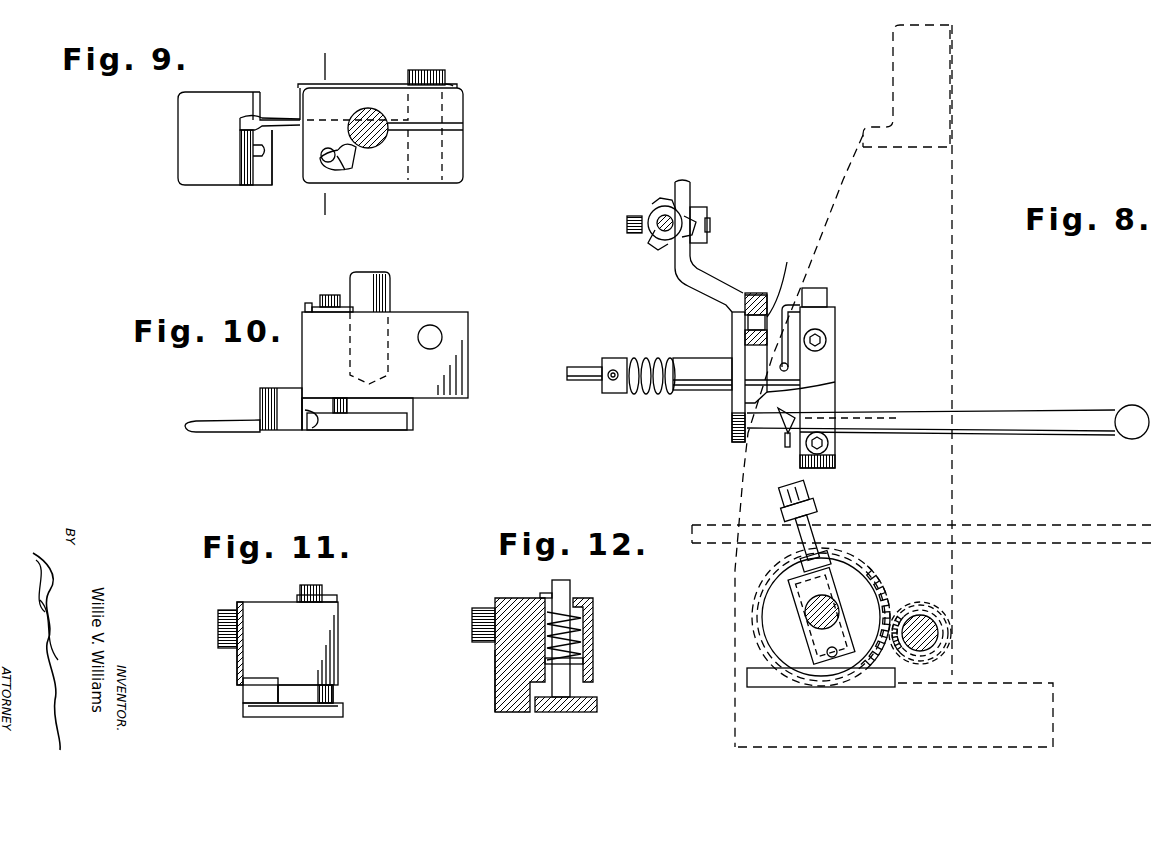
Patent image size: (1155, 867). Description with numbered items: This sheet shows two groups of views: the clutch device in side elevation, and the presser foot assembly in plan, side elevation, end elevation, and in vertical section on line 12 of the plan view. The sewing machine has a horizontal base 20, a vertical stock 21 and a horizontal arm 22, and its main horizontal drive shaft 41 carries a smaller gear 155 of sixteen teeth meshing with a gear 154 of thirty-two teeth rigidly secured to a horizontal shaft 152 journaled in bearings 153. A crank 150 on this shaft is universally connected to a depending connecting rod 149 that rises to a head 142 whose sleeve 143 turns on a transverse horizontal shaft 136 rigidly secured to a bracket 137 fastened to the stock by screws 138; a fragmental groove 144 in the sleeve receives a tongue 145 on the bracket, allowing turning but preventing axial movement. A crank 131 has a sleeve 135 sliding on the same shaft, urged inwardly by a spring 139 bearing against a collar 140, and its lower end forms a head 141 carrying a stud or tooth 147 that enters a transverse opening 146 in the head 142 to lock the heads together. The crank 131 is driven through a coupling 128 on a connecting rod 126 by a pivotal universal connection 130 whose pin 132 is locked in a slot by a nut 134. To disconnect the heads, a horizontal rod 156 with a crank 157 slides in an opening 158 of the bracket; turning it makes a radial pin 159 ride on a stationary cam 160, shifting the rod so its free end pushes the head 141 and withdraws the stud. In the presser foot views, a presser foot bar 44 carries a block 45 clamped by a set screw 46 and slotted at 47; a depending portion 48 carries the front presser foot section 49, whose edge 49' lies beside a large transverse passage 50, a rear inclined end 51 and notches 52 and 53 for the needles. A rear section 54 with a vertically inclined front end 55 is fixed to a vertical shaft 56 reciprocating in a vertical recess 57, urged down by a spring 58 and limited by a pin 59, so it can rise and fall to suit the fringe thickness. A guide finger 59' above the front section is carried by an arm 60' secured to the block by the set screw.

In FIG. 9, the section line 12 is at (318, 66).
In FIG. 8, the horizontal base 20 is at (1045, 523).
In FIG. 8, the vertical stock 21 is at (843, 174).
In FIG. 8, the horizontal arm 22 is at (957, 103).
In FIG. 8, the main horizontal drive shaft 41 is at (933, 630).
In FIG. 9, the presser foot bar 44 is at (370, 117).
In FIG. 10, the presser foot bar 44 is at (390, 290).
In FIG. 9, the block 45 is at (402, 172).
In FIG. 10, the block 45 is at (460, 340).
In FIG. 11, the block 45 is at (330, 636).
In FIG. 12, the block 45 is at (593, 623).
In FIG. 9, the set screw 46 is at (435, 70).
In FIG. 10, the set screw 46 is at (432, 330).
In FIG. 11, the set screw 46 is at (225, 610).
In FIG. 12, the set screw 46 is at (480, 608).
In FIG. 9, the slot 47 is at (457, 128).
In FIG. 9, the depending portion 48 is at (273, 97).
In FIG. 10, the depending portion 48 is at (282, 392).
In FIG. 11, the depending portion 48 is at (252, 695).
In FIG. 12, the depending portion 48 is at (505, 698).
In FIG. 9, the front presser foot section 49 is at (210, 138).
In FIG. 10, the front presser foot section 49 is at (222, 410).
In FIG. 11, the front presser foot section 49 is at (293, 723).
In FIG. 9, the blade edge 49' is at (231, 105).
In FIG. 10, the blade edge 49' is at (244, 399).
In FIG. 11, the blade edge 49' is at (262, 713).
In FIG. 9, the transverse passage 50 is at (285, 180).
In FIG. 10, the transverse passage 50 is at (302, 430).
In FIG. 9, the rear inclined end 51 is at (252, 170).
In FIG. 9, the notch 52 is at (242, 120).
In FIG. 9, the notch 53 is at (258, 153).
In FIG. 10, the rear section 54 is at (368, 423).
In FIG. 12, the rear section 54 is at (575, 712).
In FIG. 10, the vertically inclined front end 55 is at (313, 430).
In FIG. 9, the vertical shaft 56 is at (332, 163).
In FIG. 10, the vertical shaft 56 is at (327, 294).
In FIG. 11, the vertical shaft 56 is at (318, 588).
In FIG. 12, the vertical shaft 56 is at (572, 586).
In FIG. 12, the vertical recess 57 is at (582, 614).
In FIG. 12, the spring 58 is at (583, 658).
In FIG. 9, the pin 59 is at (351, 175).
In FIG. 10, the pin 59 is at (318, 295).
In FIG. 11, the pin 59 is at (340, 597).
In FIG. 12, the pin 59 is at (535, 585).
In FIG. 9, the guide finger 59' is at (469, 73).
In FIG. 9, the arm 60' is at (377, 62).
In FIG. 11, the arm 60' is at (219, 643).
In FIG. 12, the arm 60' is at (474, 661).
In FIG. 8, the connecting rod 126 is at (663, 235).
In FIG. 8, the coupling 128 is at (658, 205).
In FIG. 8, the pivotal universal connection 130 is at (641, 238).
In FIG. 8, the crank 131 is at (713, 300).
In FIG. 8, the pin 132 is at (708, 223).
In FIG. 8, the nut 134 is at (710, 241).
In FIG. 8, the sleeve 135 is at (682, 392).
In FIG. 8, the transverse horizontal shaft 136 is at (568, 387).
In FIG. 8, the bracket 137 is at (840, 390).
In FIG. 8, the screws 138 is at (838, 336).
In FIG. 8, the spring 139 is at (643, 395).
In FIG. 8, the collar 140 is at (612, 395).
In FIG. 8, the head 141 is at (732, 423).
In FIG. 8, the head 142 is at (755, 293).
In FIG. 8, the sleeve 143 is at (838, 398).
In FIG. 8, the fragmental groove 144 is at (790, 368).
In FIG. 8, the tongue 145 is at (785, 335).
In FIG. 8, the transverse opening 146 is at (790, 303).
In FIG. 8, the stud or tooth 147 is at (787, 262).
In FIG. 8, the depending connecting rod 149 is at (812, 530).
In FIG. 8, the crank 150 is at (887, 578).
In FIG. 8, the horizontal shaft 152 is at (817, 623).
In FIG. 8, the bearings 153 is at (815, 687).
In FIG. 8, the gear 154 is at (903, 594).
In FIG. 8, the smaller gear 155 is at (938, 605).
In FIG. 8, the horizontal rod 156 is at (1008, 413).
In FIG. 8, the crank 157 is at (1132, 405).
In FIG. 8, the opening 158 is at (842, 437).
In FIG. 8, the radial pin 159 is at (788, 447).
In FIG. 8, the stationary cam 160 is at (773, 432).